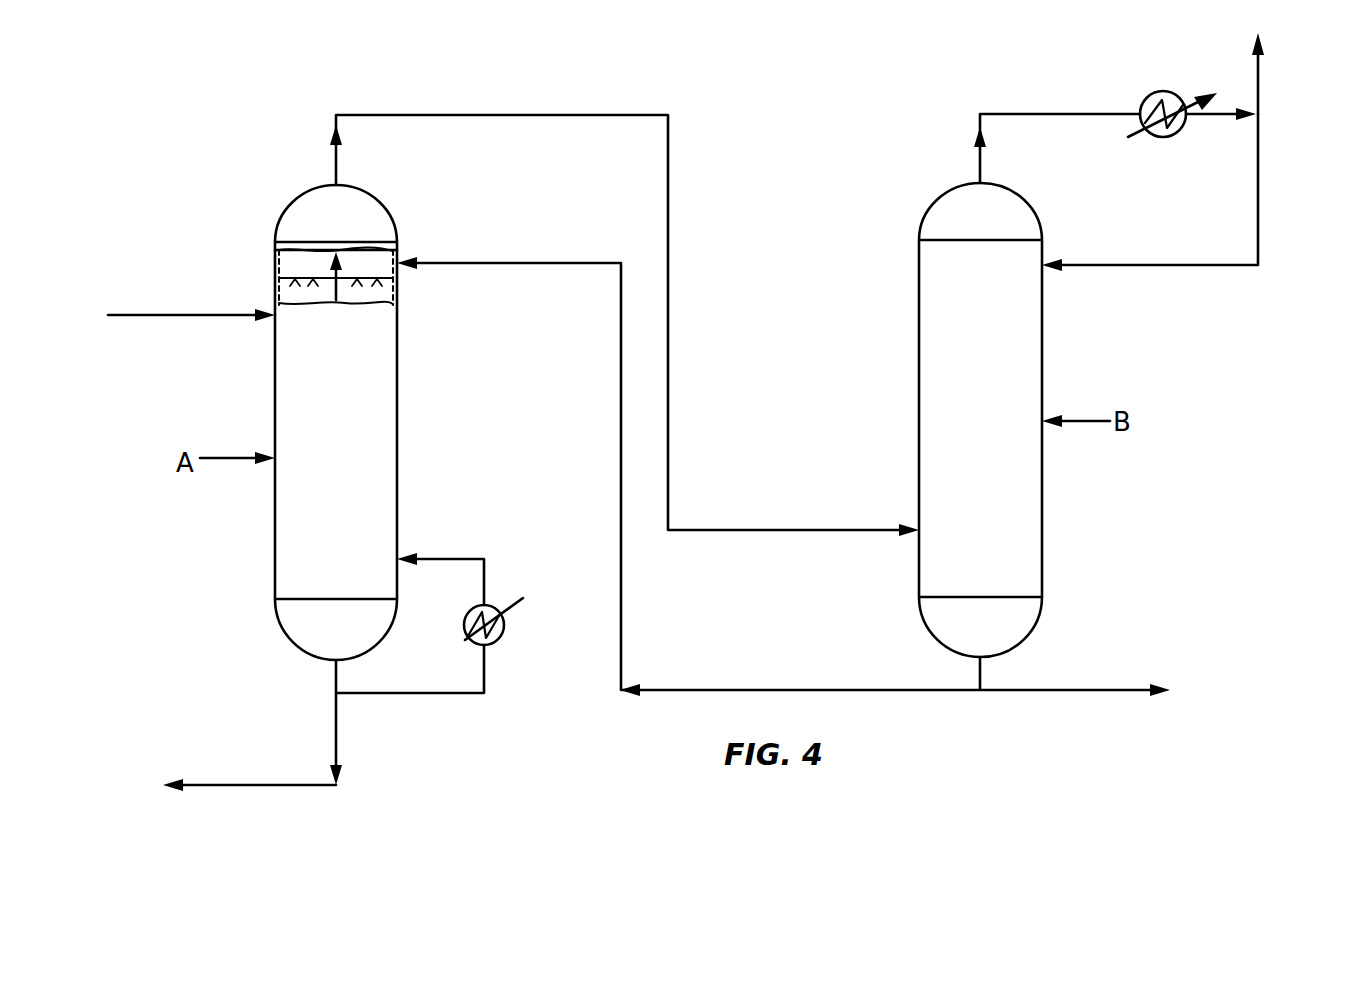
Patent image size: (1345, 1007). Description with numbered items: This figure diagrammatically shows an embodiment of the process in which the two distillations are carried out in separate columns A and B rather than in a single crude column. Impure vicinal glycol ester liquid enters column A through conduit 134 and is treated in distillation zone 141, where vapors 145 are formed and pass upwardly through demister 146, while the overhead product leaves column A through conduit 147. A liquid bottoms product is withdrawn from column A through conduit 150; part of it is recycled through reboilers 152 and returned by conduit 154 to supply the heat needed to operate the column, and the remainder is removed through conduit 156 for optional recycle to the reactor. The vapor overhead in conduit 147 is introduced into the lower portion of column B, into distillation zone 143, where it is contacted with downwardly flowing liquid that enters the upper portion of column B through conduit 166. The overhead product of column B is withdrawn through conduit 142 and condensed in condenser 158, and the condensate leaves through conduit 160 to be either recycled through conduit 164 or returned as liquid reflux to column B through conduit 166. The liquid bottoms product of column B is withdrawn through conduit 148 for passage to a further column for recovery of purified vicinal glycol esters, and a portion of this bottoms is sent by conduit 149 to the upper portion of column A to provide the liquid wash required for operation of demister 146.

The conduit 134 is at (126, 317).
The distillation zone 141 is at (356, 447).
The conduit 142 is at (1032, 114).
The distillation zone 143 is at (996, 404).
The vapors 145 is at (348, 298).
The demister 146 is at (286, 266).
The conduit 147 is at (668, 205).
The conduit 148 is at (1046, 690).
The conduit 149 is at (478, 265).
The conduit 150 is at (335, 680).
The reboilers 152 is at (458, 632).
The conduit 154 is at (437, 556).
The conduit 156 is at (228, 786).
The condenser 158 is at (1160, 91).
The conduit 160 is at (1198, 120).
The conduit 164 is at (1259, 74).
The conduit 166 is at (1130, 265).